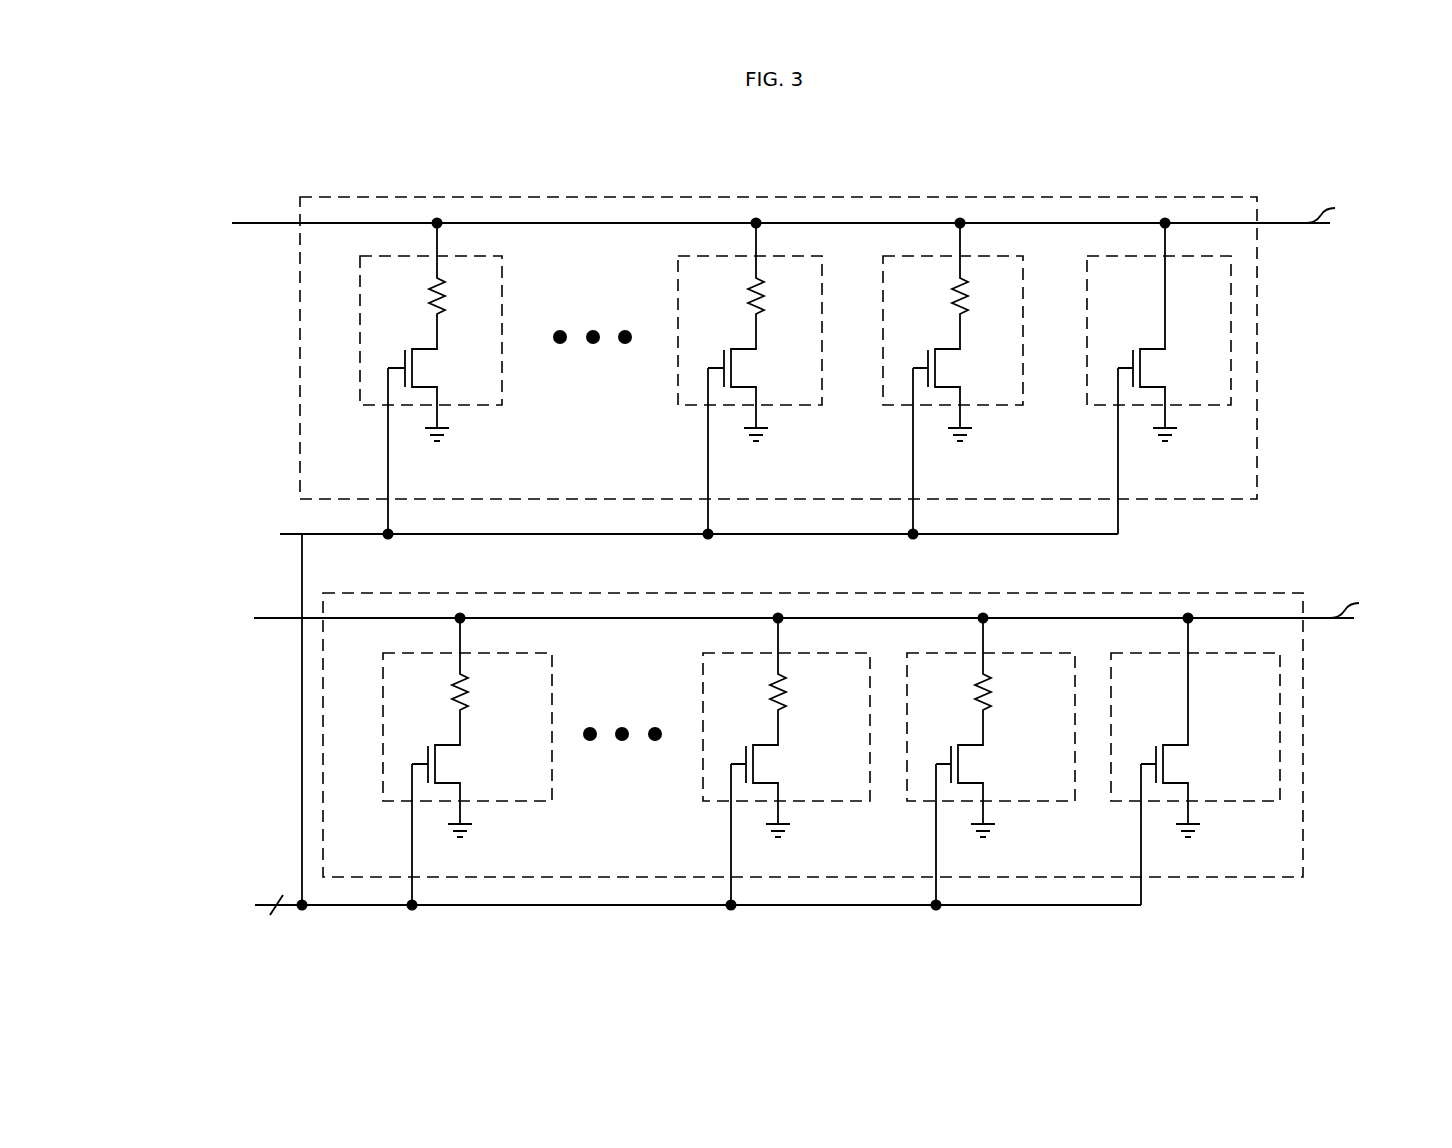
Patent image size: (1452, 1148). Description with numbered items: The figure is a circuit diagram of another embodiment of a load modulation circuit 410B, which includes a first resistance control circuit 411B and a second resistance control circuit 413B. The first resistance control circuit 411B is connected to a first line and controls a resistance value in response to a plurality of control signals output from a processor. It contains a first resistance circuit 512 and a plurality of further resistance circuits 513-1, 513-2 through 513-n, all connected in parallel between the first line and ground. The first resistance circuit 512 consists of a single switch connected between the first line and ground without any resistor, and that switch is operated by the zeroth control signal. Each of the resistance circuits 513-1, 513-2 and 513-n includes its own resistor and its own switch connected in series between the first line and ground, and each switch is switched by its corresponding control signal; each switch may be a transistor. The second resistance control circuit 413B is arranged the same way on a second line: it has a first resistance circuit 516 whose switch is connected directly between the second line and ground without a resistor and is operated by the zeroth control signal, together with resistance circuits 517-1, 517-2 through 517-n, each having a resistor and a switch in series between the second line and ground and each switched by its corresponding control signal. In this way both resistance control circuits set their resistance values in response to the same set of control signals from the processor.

The load modulation circuit 410B is at (1364, 127).
The first resistance control circuit 411B is at (1216, 194).
The second resistance control circuit 413B is at (1238, 592).
The first resistance circuit 512 is at (1206, 407).
The resistance circuit 513-1 is at (1003, 407).
The resistance circuit 513-2 is at (798, 407).
The last resistance circuit 513-n is at (503, 281).
The first resistance circuit 516 is at (1236, 803).
The resistance circuit 517-1 is at (1024, 803).
The resistance circuit 517-2 is at (822, 803).
The last resistance circuit 517-n is at (553, 677).